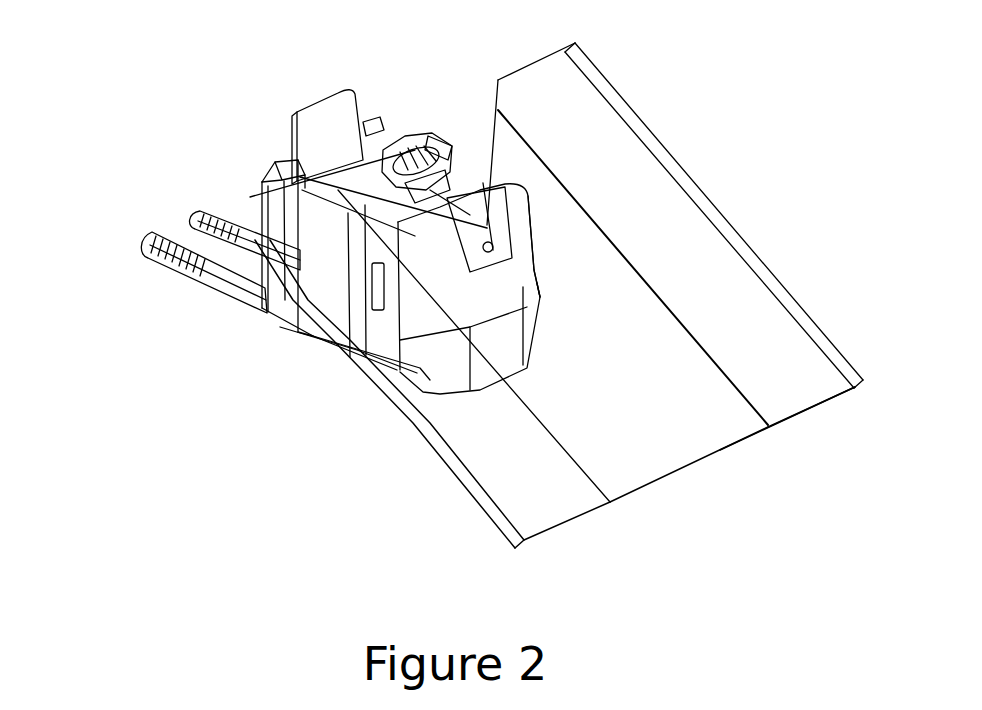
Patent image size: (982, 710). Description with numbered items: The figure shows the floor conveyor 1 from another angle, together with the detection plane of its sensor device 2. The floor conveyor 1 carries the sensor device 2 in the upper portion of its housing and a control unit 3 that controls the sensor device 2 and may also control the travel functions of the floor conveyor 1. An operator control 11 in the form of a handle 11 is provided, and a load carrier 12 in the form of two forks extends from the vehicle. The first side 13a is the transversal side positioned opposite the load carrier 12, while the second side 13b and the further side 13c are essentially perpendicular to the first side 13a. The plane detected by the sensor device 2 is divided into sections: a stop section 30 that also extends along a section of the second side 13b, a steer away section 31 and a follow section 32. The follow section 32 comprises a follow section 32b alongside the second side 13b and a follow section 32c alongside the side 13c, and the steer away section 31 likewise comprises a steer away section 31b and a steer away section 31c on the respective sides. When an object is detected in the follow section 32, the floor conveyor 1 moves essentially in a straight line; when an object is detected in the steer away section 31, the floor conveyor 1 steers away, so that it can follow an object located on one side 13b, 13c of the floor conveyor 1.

The floor conveyor 1 is at (154, 318).
The sensor device 2 is at (492, 228).
The control unit 3 is at (440, 143).
The operator control 11 is at (390, 153).
The load carrier 12 is at (172, 238).
The first side 13a is at (493, 346).
The second side 13b is at (551, 249).
The side 13c is at (313, 333).
The stop section 30 is at (559, 295).
The steer away section 31 is at (624, 280).
The steer away section 31b is at (791, 402).
The steer away section 31c is at (474, 369).
The follow section 32 is at (697, 188).
The follow section 32b is at (743, 242).
The follow section 32c is at (457, 478).